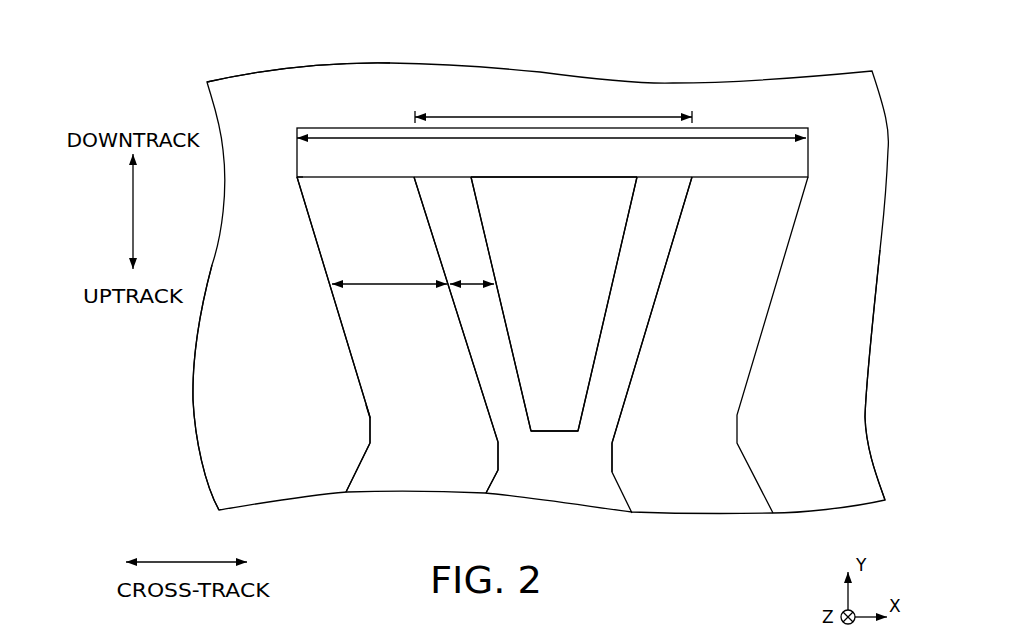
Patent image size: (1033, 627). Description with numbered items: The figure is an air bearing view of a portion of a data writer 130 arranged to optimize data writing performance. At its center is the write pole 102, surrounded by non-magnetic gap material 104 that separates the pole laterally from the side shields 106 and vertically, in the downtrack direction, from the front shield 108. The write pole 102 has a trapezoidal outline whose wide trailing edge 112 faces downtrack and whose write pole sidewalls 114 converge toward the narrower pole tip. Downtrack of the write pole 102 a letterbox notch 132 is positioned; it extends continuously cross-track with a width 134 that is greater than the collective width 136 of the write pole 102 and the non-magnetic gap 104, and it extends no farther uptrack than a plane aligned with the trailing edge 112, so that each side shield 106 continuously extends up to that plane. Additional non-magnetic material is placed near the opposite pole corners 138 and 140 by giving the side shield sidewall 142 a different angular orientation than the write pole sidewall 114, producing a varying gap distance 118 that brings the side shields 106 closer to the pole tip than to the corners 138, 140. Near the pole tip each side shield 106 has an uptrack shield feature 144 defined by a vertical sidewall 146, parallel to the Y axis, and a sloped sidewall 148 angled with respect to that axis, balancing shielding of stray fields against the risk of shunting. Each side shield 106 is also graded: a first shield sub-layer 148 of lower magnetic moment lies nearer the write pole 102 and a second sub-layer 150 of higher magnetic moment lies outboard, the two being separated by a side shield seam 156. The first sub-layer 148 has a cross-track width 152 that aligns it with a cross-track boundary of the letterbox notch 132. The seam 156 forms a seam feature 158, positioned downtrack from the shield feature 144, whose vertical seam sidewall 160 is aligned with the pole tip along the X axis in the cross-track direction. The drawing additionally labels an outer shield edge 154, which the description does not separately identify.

The write pole 102 is at (571, 313).
The non-magnetic gap material 104 is at (571, 481).
The side shields 106 is at (196, 422).
The front shield 108 is at (258, 105).
The trailing edge 112 is at (545, 178).
The write pole sidewall 114 is at (489, 249).
The gap distance 118 is at (462, 287).
The data writer 130 is at (799, 49).
The letterbox notch 132 is at (296, 178).
The width 134 is at (778, 140).
The collective width 136 is at (553, 107).
The pole corner 138 is at (468, 191).
The pole corner 140 is at (640, 188).
The side shield sidewall 142 is at (624, 470).
The uptrack shield feature 144 is at (497, 451).
The vertical sidewall 146 is at (487, 489).
The first shield sub-layer 148 is at (443, 418).
The second side shield sub-layer 150 is at (246, 483).
The cross-track width 152 is at (380, 285).
The outer side wall of side shield 154 is at (326, 275).
The side shield seam 156 is at (321, 430).
The seam feature 158 is at (371, 425).
The vertical seam sidewall 160 is at (363, 460).